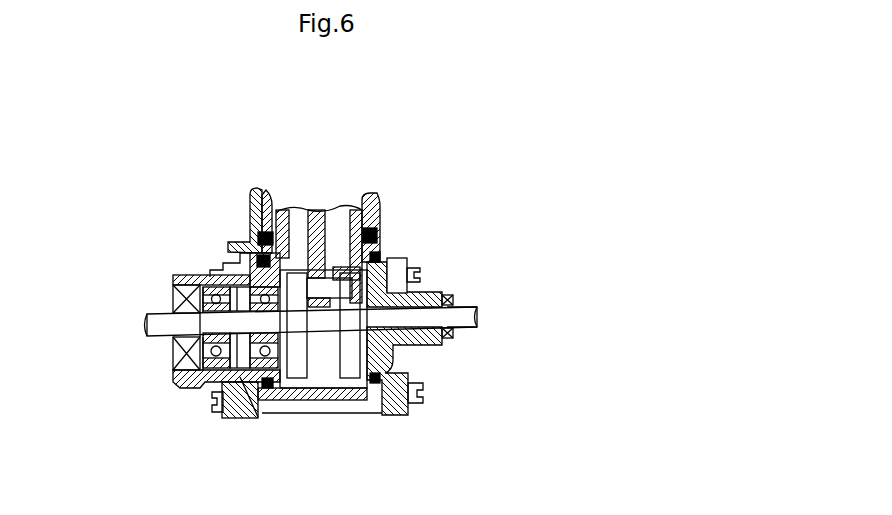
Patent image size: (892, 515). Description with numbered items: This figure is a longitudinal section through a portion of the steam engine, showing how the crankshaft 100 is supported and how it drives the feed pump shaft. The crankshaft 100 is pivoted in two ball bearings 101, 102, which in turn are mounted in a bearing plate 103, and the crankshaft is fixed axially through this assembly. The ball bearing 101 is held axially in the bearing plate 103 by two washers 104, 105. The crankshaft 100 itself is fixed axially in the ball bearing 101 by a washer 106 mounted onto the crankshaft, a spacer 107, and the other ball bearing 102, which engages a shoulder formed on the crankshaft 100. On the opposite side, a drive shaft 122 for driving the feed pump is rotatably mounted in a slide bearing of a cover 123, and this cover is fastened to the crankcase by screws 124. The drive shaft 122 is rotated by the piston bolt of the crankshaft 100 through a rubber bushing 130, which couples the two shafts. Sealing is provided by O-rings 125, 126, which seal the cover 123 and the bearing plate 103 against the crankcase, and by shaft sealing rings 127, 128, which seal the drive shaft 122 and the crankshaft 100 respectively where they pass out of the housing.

The crankshaft 100 is at (147, 323).
The ball bearing 101 is at (200, 285).
The ball bearing 102 is at (231, 243).
The bearing plate 103 is at (177, 378).
The washer 104 is at (200, 377).
The washer 105 is at (232, 372).
The washer 106 is at (198, 323).
The spacer 107 is at (262, 384).
The drive shaft 122 is at (477, 317).
The cover 123 is at (432, 293).
The screws 124 is at (423, 388).
The O-ring 125 is at (384, 216).
The O-ring 126 is at (258, 233).
The shaft sealing ring 127 is at (455, 300).
The shaft sealing ring 128 is at (173, 295).
The rubber bushing 130 is at (345, 272).